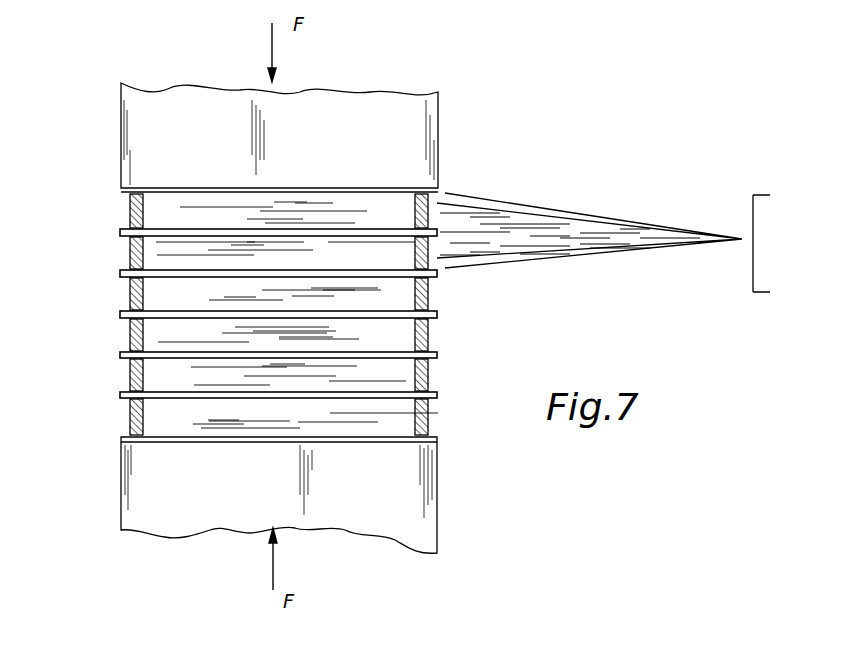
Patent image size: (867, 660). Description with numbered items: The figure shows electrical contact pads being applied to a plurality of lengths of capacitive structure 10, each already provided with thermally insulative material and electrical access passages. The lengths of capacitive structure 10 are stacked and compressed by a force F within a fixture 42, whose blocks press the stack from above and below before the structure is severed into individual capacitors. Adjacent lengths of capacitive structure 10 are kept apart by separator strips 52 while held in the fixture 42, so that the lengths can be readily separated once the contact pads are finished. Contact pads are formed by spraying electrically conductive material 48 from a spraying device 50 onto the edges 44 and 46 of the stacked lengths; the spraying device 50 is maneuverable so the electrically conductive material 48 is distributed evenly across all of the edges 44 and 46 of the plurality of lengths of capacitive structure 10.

The length of capacitive structure 10 is at (112, 428).
The fixture 42 is at (440, 133).
The edge 44 is at (128, 222).
The edge 46 is at (430, 217).
The electrically conductive material 48 is at (588, 222).
The spraying device 50 is at (760, 200).
The separator strip 52 is at (357, 228).